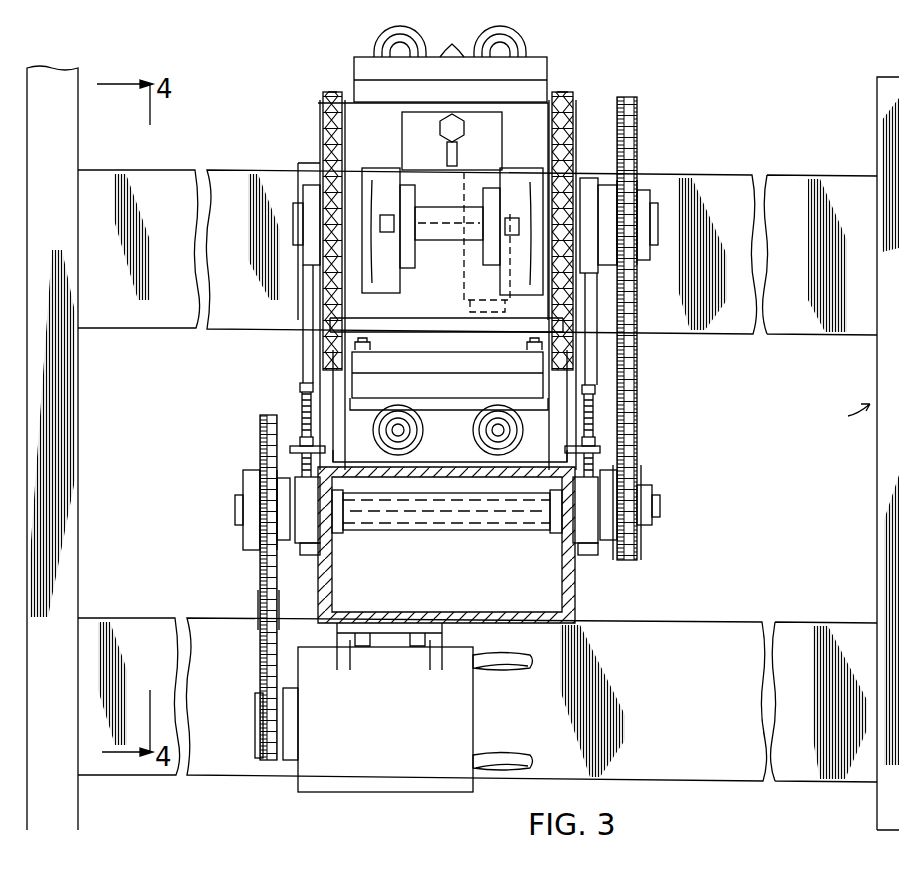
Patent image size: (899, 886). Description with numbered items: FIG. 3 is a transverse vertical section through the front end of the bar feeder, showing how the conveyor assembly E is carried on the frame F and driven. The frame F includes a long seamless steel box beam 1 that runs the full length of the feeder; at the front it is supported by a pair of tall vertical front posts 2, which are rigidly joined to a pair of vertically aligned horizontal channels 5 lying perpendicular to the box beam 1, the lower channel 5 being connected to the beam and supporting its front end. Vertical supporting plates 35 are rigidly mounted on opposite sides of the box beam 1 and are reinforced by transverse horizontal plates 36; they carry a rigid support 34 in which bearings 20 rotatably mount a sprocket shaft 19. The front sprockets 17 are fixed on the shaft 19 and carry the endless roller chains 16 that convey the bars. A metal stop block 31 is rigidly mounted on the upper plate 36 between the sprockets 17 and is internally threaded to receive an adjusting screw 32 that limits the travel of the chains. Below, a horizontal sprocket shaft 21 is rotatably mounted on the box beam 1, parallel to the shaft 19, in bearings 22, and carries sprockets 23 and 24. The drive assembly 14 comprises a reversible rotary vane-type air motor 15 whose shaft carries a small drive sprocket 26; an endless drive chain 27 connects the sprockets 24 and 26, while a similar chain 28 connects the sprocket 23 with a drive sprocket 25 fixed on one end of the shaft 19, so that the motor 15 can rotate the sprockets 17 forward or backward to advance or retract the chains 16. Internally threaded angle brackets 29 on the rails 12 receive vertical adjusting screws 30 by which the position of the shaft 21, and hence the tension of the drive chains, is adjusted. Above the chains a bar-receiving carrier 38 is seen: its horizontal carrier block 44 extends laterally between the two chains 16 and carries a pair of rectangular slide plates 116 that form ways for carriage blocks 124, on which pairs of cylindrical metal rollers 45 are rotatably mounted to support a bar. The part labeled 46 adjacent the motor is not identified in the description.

The box beam 1 is at (575, 600).
The front posts 2 is at (78, 510).
The horizontal channels 5 is at (115, 330).
The rails 12 is at (340, 434).
The drive assembly 14 is at (240, 472).
The air motor 15 is at (485, 738).
The conveyor chain 16 is at (323, 100).
The front sprockets 17 is at (322, 124).
The sprocket shaft 19 is at (438, 246).
The bearings 20 is at (536, 168).
The horizontal sprocket shaft 21 is at (480, 532).
The bearings 22 is at (318, 540).
The sprocket 23 is at (638, 546).
The sprocket 24 is at (260, 566).
The drive sprocket 25 is at (637, 118).
The small drive sprocket 26 is at (258, 700).
The endless drive chain 27 is at (260, 610).
The drive chain 28 is at (637, 420).
The angle brackets 29 is at (338, 458).
The adjusting screws 30 is at (300, 400).
The stop block 31 is at (402, 120).
The adjusting screw 32 is at (446, 136).
The rigid support 34 is at (360, 176).
The vertical supporting plates 35 is at (300, 350).
The transverse horizontal plates 36 is at (468, 302).
The bar-receiving carrier 38 is at (376, 47).
The carrier block 44 is at (445, 92).
The rollers 45 is at (524, 46).
The motor 46 is at (354, 792).
The slide plates 116 is at (466, 386).
The carriage blocks 124 is at (451, 37).
The conveyor assembly E is at (583, 82).
The frame F is at (850, 416).